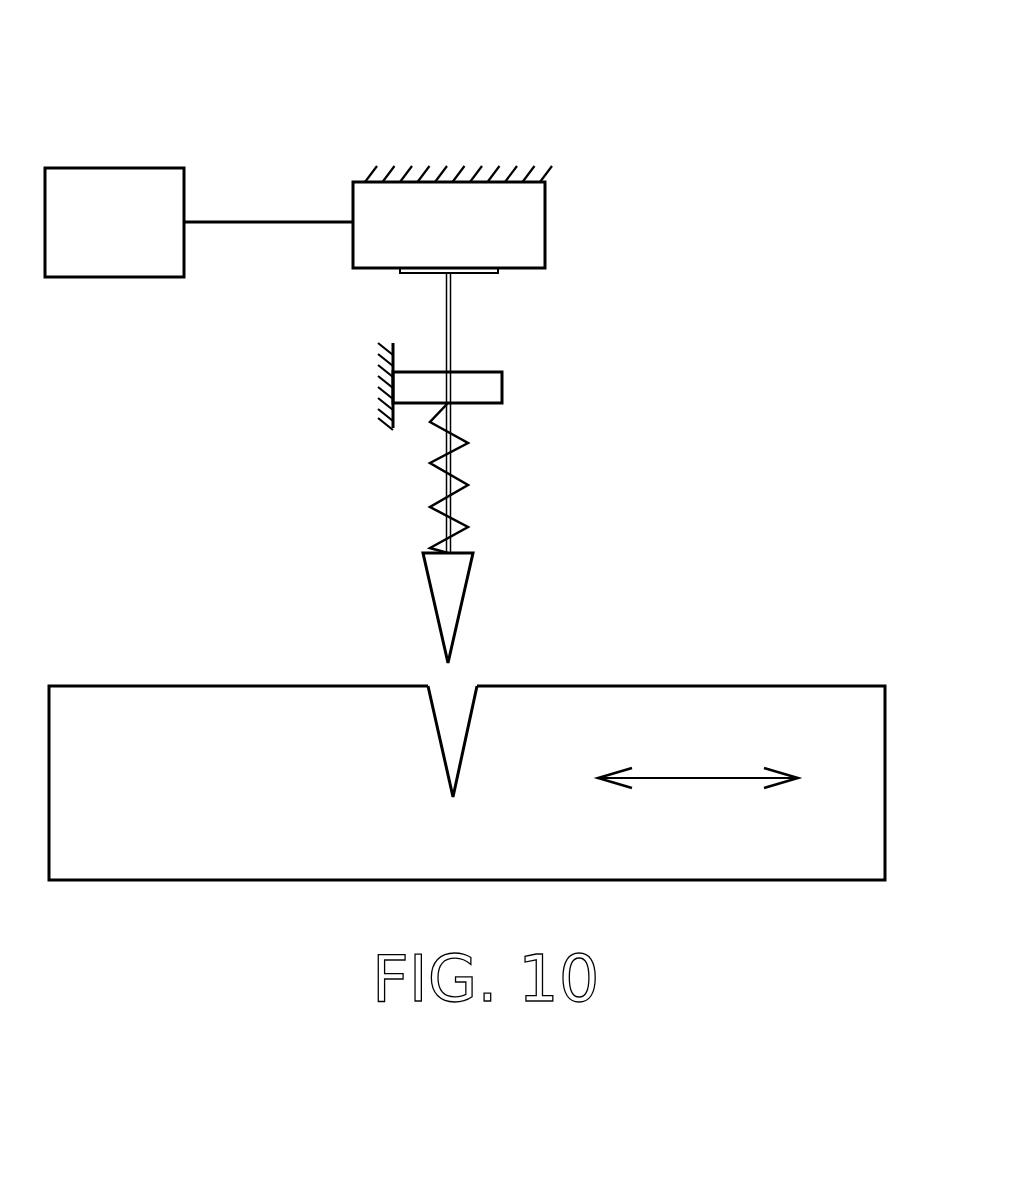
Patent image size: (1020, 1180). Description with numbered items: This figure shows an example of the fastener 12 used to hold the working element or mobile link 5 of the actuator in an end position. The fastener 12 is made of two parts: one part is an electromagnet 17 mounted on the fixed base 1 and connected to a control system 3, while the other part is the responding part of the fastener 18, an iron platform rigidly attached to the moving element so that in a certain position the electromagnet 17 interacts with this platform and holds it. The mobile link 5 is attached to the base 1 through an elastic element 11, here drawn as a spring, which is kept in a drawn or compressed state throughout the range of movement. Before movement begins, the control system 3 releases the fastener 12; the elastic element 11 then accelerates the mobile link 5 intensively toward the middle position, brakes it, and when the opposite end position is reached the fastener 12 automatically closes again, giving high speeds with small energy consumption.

The base 1 is at (442, 175).
The control system 3 is at (115, 243).
The mobile link 5 is at (232, 748).
The elastic element 11 is at (468, 485).
The fastener 12 is at (452, 597).
The electromagnet 17 is at (527, 216).
The responding part of the fastener 18 is at (485, 273).